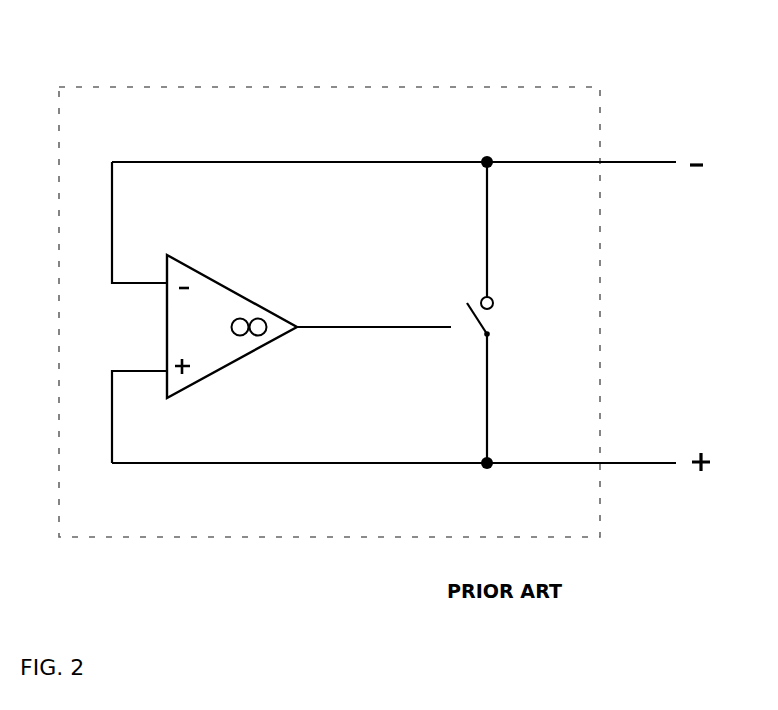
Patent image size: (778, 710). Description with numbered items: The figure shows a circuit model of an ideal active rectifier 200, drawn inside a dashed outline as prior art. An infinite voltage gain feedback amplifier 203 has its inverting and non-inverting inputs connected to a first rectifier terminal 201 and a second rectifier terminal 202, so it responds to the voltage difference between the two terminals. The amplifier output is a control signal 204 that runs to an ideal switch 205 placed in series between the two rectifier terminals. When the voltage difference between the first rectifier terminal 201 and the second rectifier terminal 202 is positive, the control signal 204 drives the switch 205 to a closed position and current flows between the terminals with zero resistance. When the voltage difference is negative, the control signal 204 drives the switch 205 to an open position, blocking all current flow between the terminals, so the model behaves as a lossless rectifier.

The ideal active rectifier 200 is at (329, 312).
The first rectifier terminal 201 is at (637, 143).
The second rectifier terminal 202 is at (637, 450).
The infinite voltage gain feedback amplifier 203 is at (247, 285).
The control signal 204 is at (341, 342).
The ideal switch 205 is at (468, 285).